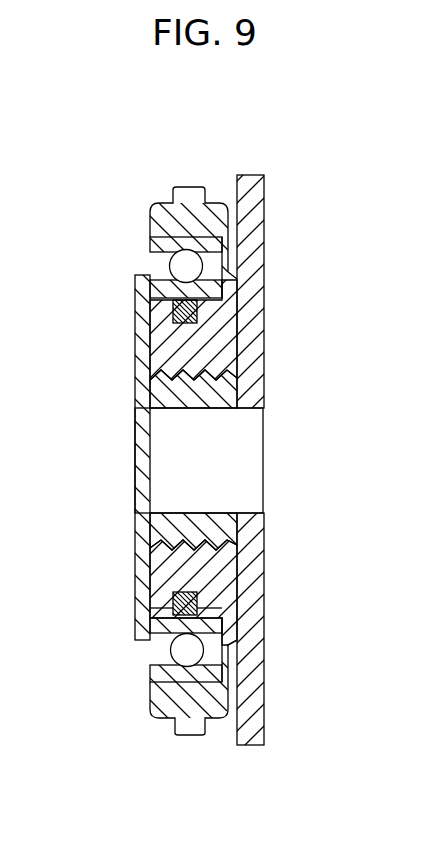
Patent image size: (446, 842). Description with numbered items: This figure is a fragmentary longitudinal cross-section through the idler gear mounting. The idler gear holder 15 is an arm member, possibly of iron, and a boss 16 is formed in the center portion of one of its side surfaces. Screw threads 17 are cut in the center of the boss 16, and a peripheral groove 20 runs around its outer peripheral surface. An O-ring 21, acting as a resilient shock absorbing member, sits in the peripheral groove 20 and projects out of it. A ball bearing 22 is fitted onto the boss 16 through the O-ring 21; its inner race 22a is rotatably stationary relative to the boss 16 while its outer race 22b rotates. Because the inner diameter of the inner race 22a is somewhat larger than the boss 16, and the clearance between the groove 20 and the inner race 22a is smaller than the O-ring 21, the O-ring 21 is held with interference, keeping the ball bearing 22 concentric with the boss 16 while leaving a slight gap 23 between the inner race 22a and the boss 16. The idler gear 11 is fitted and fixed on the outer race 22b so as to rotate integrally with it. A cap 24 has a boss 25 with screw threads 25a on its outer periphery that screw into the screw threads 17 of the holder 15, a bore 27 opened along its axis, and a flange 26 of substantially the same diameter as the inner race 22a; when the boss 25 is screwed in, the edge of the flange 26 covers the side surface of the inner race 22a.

The idler gear 11 is at (163, 212).
The idler gear holder 15 is at (275, 313).
The boss 16 is at (190, 350).
The screw threads 17 is at (195, 525).
The peripheral groove 20 is at (200, 592).
The O-ring 21 is at (173, 594).
The ball bearing 22 is at (140, 247).
The inner race 22a is at (148, 648).
The outer race 22b is at (150, 672).
The gap 23 is at (197, 313).
The cap 24 is at (192, 618).
The boss 25 is at (217, 395).
The screw threads 25a is at (185, 512).
The flange 26 is at (140, 297).
The bore 27 is at (157, 463).